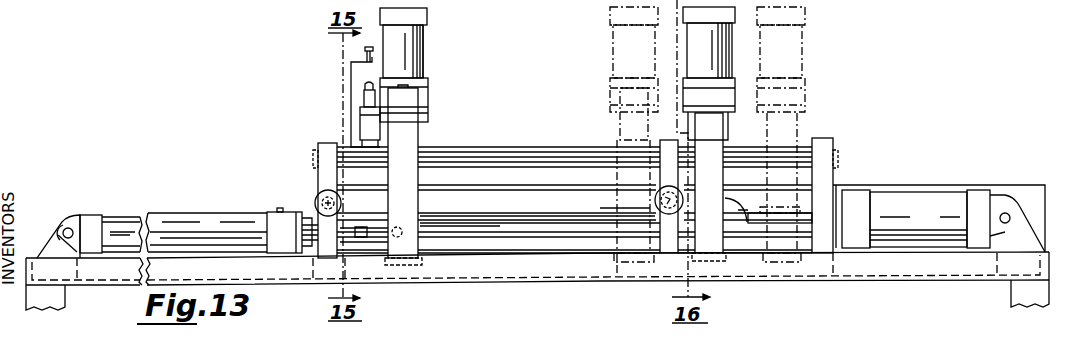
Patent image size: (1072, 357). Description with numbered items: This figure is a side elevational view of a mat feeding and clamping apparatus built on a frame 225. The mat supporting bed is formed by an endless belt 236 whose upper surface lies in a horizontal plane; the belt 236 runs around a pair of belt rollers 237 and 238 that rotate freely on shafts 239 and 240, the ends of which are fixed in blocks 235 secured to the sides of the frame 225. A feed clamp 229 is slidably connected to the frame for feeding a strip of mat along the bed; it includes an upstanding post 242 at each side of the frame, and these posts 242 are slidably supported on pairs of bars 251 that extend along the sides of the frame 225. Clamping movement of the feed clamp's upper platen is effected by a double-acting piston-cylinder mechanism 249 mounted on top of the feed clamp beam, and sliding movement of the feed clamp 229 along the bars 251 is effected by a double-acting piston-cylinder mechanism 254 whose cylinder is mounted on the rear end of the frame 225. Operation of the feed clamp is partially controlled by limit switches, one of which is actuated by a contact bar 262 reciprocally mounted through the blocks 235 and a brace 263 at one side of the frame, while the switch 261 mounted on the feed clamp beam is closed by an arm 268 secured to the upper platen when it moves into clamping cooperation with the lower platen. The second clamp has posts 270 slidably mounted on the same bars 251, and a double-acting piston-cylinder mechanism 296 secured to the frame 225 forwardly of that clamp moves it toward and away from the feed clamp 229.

The frame 225 is at (557, 285).
The feed clamp 229 is at (447, 0).
The blocks 235 is at (318, 145).
The endless belt 236 is at (469, 213).
The belt roller 237 is at (355, 200).
The belt roller 238 is at (655, 202).
The shaft 239 is at (316, 199).
The shaft 240 is at (660, 185).
The upstanding post 242 is at (410, 160).
The double-acting piston-cylinder mechanism 249 is at (424, 60).
The bars 251 is at (535, 147).
The double-acting piston-cylinder mechanism 254 is at (189, 213).
The limit switch 261 is at (362, 116).
The contact bar 262 is at (493, 224).
The brace 263 is at (277, 208).
The arm 268 is at (351, 72).
The posts 270 is at (726, 199).
The double-acting piston-cylinder mechanism 296 is at (932, 200).